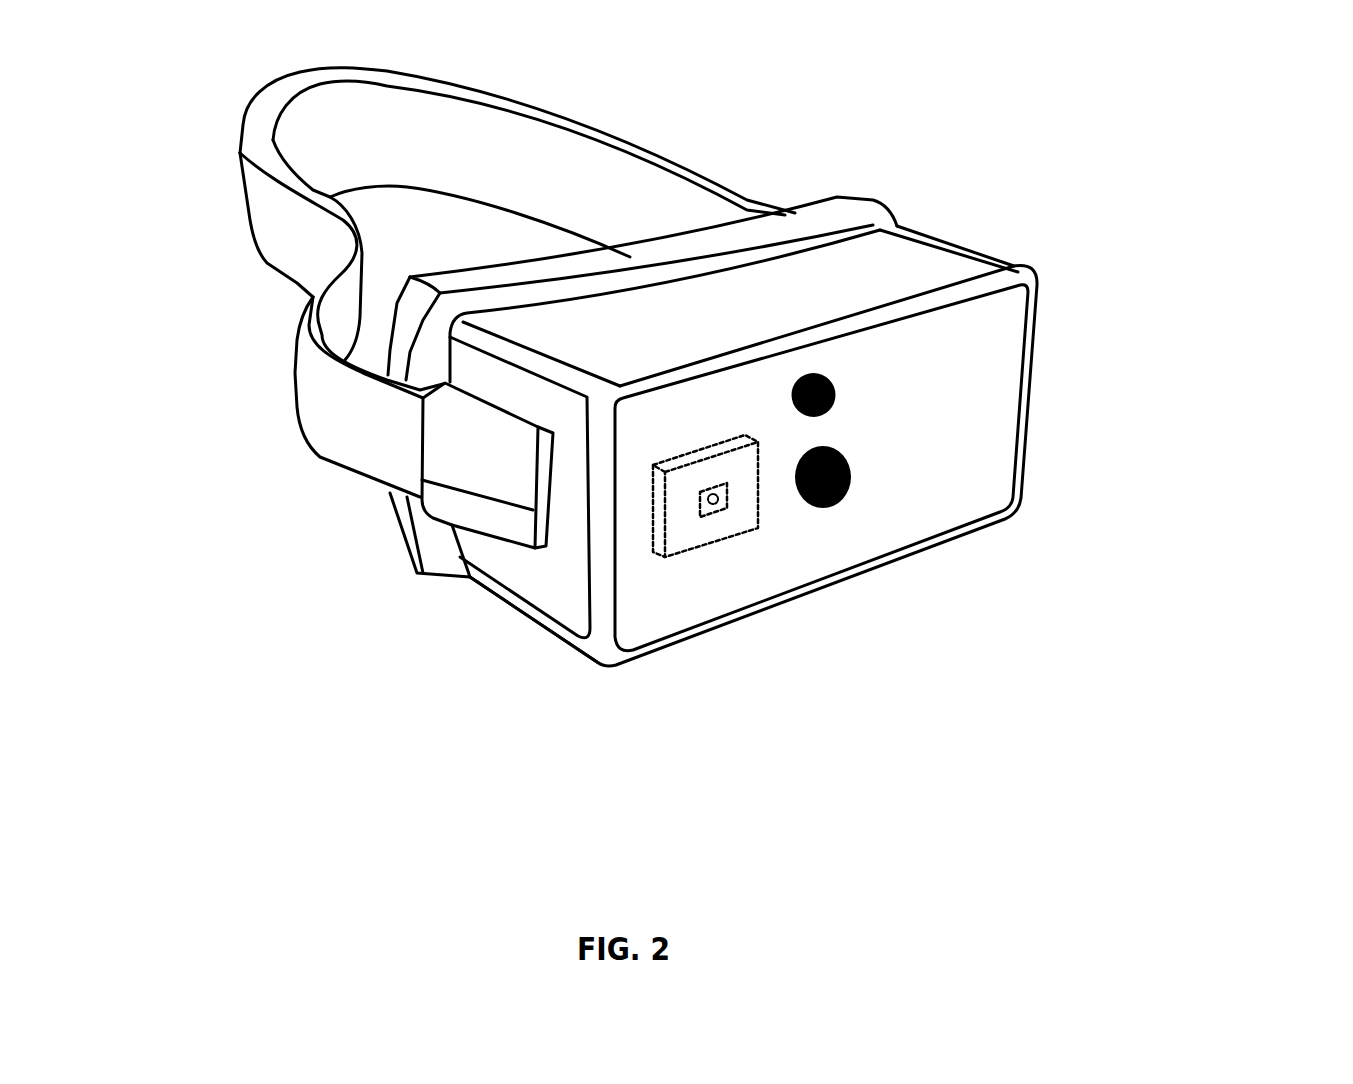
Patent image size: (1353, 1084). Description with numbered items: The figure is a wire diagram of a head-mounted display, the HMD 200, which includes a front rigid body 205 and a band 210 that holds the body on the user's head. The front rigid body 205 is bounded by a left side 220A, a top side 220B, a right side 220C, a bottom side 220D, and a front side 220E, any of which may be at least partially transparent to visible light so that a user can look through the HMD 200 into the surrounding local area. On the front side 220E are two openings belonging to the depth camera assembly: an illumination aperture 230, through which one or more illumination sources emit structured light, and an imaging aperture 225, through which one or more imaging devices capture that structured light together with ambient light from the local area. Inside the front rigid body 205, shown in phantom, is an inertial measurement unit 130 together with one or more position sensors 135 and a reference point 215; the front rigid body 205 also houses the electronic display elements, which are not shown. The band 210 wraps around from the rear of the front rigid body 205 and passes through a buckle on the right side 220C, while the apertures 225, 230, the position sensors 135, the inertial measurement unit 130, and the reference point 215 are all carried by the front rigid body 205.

The HMD 200 is at (165, 63).
The front rigid body 205 is at (708, 462).
The band 210 is at (640, 157).
The reference point 215 is at (713, 507).
The left side 220A is at (992, 243).
The top side 220B is at (557, 327).
The right side 220C is at (557, 573).
The bottom side 220D is at (500, 625).
The front side 220E is at (643, 610).
The imaging aperture 225 is at (850, 477).
The illumination aperture 230 is at (833, 381).
The inertial measurement unit (IMU) 130 is at (760, 513).
The position sensors 135 is at (700, 515).